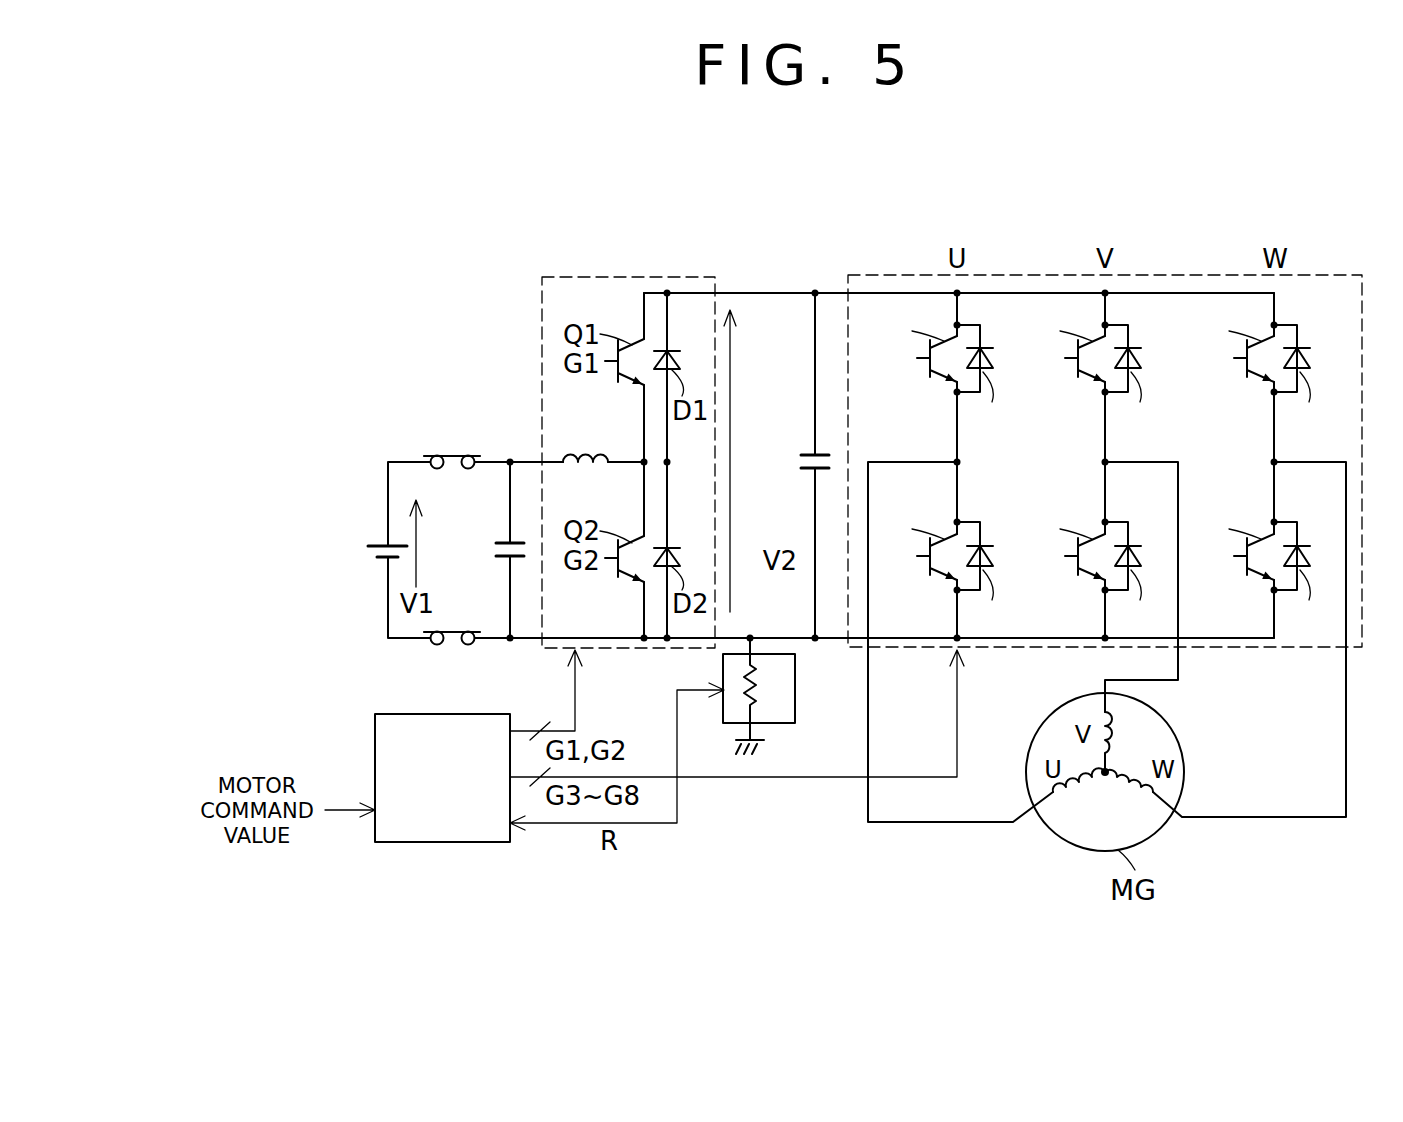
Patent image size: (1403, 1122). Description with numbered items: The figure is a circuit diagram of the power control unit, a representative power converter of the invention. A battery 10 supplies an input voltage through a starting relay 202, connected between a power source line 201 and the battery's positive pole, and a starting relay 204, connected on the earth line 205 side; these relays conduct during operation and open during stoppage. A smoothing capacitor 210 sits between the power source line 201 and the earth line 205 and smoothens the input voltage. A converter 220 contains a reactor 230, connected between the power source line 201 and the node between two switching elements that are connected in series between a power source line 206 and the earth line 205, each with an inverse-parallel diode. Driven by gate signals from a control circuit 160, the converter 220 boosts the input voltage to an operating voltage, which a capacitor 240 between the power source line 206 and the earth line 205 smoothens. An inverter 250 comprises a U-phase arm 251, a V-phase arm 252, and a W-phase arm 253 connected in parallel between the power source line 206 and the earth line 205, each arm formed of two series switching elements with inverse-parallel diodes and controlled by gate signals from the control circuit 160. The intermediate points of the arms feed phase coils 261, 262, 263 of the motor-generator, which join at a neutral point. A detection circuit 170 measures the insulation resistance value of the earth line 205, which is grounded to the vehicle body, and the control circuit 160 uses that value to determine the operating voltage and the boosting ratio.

The battery 10 is at (375, 545).
The control circuit 160 is at (432, 843).
The detection circuit 170 is at (795, 712).
The power source line 201 is at (493, 460).
The starting relay 202 is at (445, 456).
The starting relay 204 is at (452, 645).
The earth line 205 is at (611, 650).
The power source line 206 is at (757, 292).
The smoothing capacitor 210 is at (506, 541).
The converter 220 is at (612, 277).
The reactor 230 is at (578, 455).
The capacitor 240 is at (811, 455).
The inverter 250 is at (872, 275).
The U-phase arm 251 is at (945, 452).
The V-phase arm 252 is at (1169, 452).
The W-phase arm 253 is at (1329, 452).
The phase coil 261 is at (1082, 792).
The phase coil 262 is at (1100, 712).
The phase coil 263 is at (1123, 768).